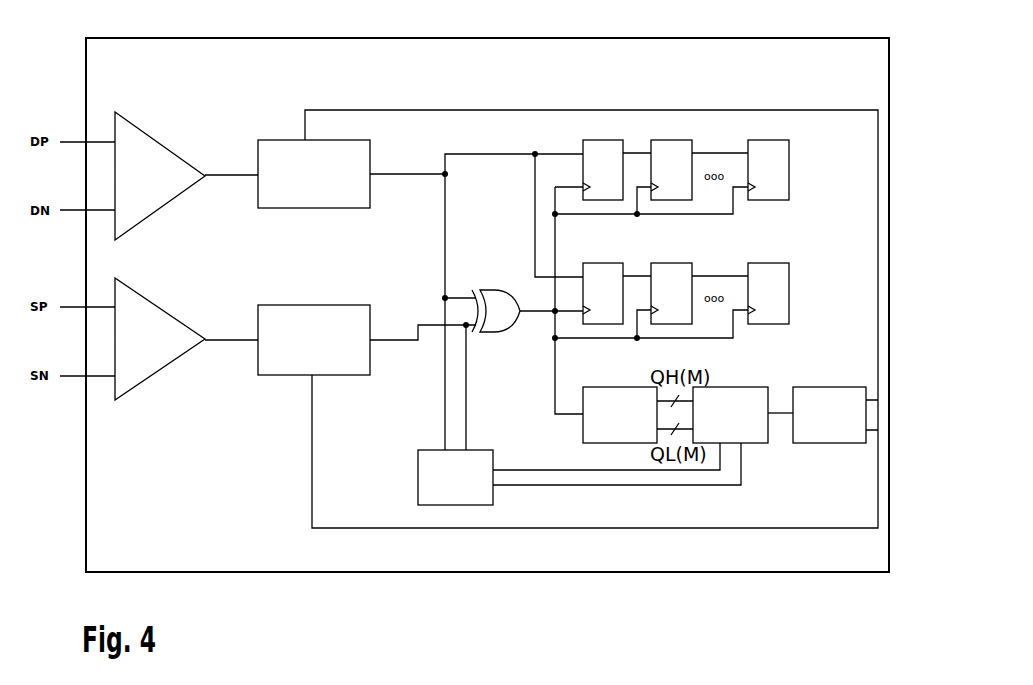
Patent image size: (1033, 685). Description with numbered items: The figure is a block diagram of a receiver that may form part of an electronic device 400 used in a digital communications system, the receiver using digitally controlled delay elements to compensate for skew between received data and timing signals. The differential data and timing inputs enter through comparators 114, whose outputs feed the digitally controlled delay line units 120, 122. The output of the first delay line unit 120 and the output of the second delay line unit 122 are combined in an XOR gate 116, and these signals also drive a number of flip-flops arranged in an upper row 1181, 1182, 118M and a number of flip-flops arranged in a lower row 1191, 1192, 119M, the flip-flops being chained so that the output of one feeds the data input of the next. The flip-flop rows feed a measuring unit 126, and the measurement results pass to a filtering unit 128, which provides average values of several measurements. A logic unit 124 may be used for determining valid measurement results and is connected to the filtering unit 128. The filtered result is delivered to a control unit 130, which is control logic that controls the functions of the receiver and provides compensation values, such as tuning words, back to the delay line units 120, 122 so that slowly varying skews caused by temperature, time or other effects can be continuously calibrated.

The electronic device 400 is at (690, 38).
The comparator 114 is at (155, 140).
The digitally controlled delay line unit 120 is at (330, 140).
The digitally controlled delay line unit 122 is at (312, 305).
The XOR gate 116 is at (520, 330).
The flip-flop in upper row 1181 is at (588, 140).
The flip-flop in upper row 1182 is at (666, 140).
The flip-flop in upper row 118M is at (753, 140).
The flip-flop in lower row 1191 is at (588, 263).
The flip-flop in lower row 1192 is at (666, 263).
The flip-flop in lower row 119M is at (753, 263).
The measuring unit 126 is at (588, 387).
The filtering unit 128 is at (712, 387).
The control unit 130 is at (797, 387).
The logic unit 124 is at (478, 450).